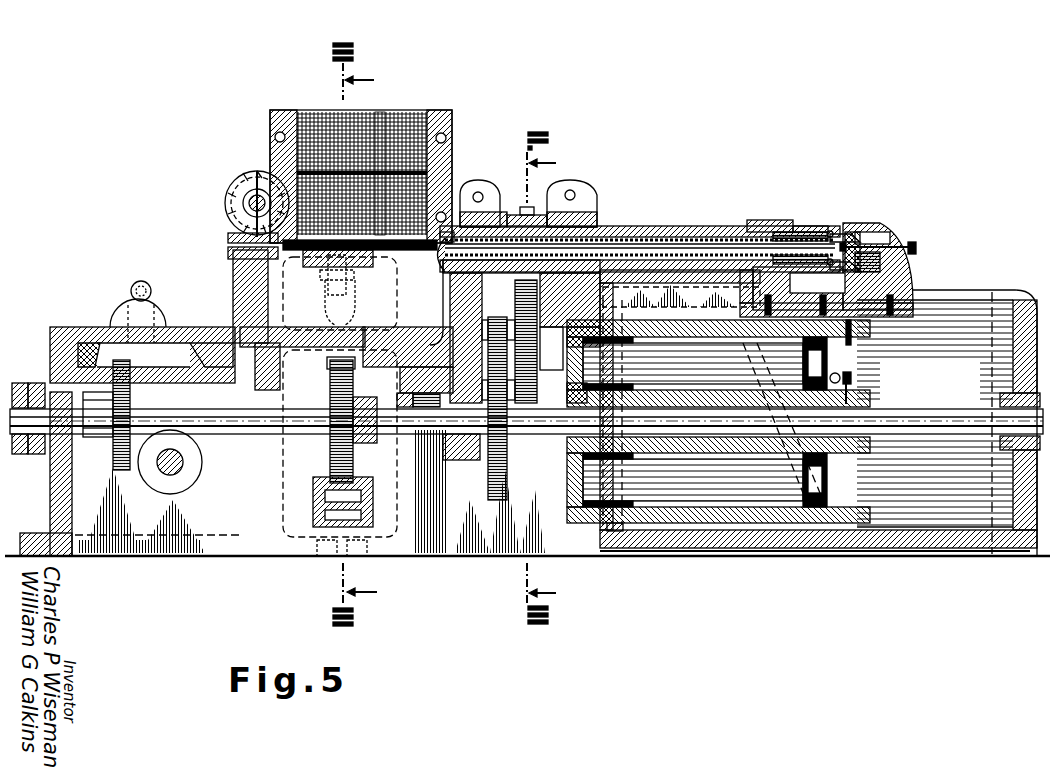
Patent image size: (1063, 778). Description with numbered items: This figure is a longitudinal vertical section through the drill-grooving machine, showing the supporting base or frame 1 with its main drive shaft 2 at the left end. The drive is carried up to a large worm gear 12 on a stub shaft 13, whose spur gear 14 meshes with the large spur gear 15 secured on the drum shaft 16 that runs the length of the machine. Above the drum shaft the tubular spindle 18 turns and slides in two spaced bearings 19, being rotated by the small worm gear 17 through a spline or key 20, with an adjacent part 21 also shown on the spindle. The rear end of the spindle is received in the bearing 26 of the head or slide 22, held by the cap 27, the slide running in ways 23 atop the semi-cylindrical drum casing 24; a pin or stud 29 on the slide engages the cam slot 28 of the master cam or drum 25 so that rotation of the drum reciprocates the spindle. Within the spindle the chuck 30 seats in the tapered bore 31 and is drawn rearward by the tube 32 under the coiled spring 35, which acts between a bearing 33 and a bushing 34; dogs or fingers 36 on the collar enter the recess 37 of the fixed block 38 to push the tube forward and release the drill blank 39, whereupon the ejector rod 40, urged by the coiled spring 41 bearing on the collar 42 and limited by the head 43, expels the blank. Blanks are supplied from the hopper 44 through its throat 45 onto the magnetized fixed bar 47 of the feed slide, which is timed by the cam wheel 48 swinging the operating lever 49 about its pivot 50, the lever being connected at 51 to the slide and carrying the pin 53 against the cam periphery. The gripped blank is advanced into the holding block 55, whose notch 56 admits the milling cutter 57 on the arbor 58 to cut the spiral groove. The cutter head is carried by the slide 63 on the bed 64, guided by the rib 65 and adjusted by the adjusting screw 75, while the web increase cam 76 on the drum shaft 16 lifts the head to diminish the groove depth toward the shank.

The supporting base or frame 1 is at (52, 500).
The main drive shaft 2 is at (183, 462).
The worm gear 12 is at (527, 410).
The stub shaft 13 is at (529, 360).
The spur gear 14 is at (448, 322).
The spur gear 15 is at (490, 470).
The drum shaft 16 is at (255, 432).
The worm gear 17 is at (520, 207).
The spindle 18 is at (640, 240).
The bearings 19 is at (468, 200).
The spline or key 20 is at (538, 215).
The sleeve 21 is at (605, 236).
The head or slide 22 is at (915, 285).
The ways 23 is at (672, 297).
The drum casing 24 is at (960, 330).
The master cam or drum 25 is at (595, 470).
The bearing 26 is at (790, 232).
The cap 27 is at (805, 232).
The cam slot 28 is at (773, 458).
The pin or stud 29 is at (855, 330).
The chuck 30 is at (447, 270).
The tapered bore 31 is at (440, 242).
The tube 32 is at (672, 248).
The bearing 33 is at (717, 289).
The bushing 34 is at (822, 230).
The coiled spring 35 is at (772, 230).
The dogs or fingers 36 is at (860, 226).
The recess 37 is at (900, 238).
The fixed block 38 is at (913, 268).
The drill blank 39 is at (388, 260).
The ejector rod 40 is at (620, 242).
The coiled spring 41 is at (905, 248).
The collar 42 is at (870, 228).
The head 43 is at (917, 248).
The hopper 44 is at (440, 112).
The throat 45 is at (410, 210).
The fixed bar 47 is at (318, 268).
The cam wheel 48 is at (330, 452).
The operating lever 49 is at (327, 365).
The pivot 50 is at (368, 500).
The pivotal connection 51 is at (322, 300).
The pin 53 is at (330, 410).
The holding block 55 is at (228, 258).
The notch 56 is at (240, 268).
The milling cutter 57 is at (257, 170).
The arbor 58 is at (238, 188).
The slide 63 is at (205, 340).
The bed 64 is at (55, 370).
The rib 65 is at (100, 343).
The adjusting screw 75 is at (120, 300).
The web increase cam 76 is at (113, 455).